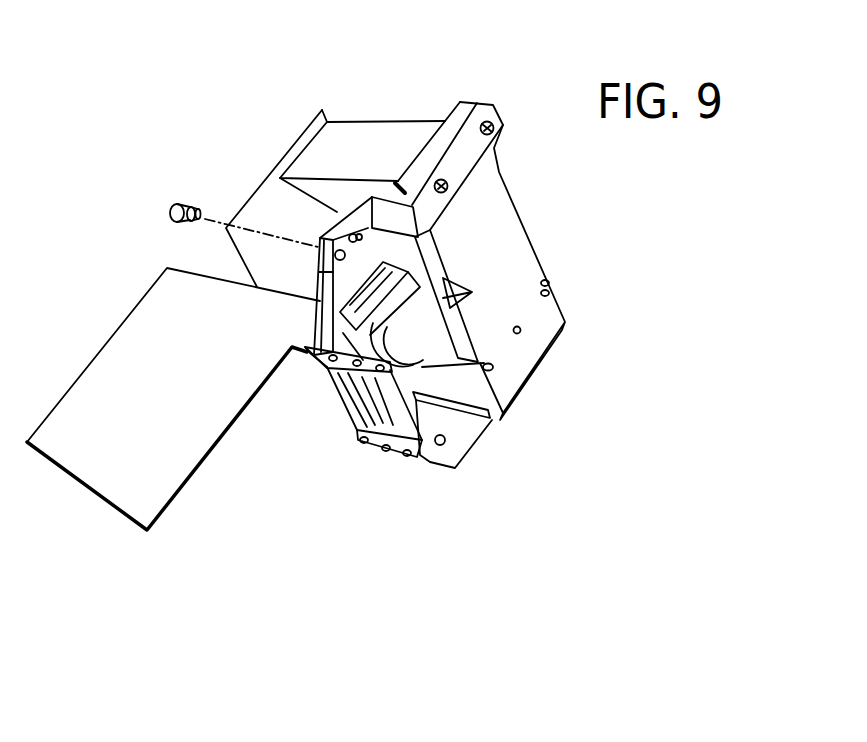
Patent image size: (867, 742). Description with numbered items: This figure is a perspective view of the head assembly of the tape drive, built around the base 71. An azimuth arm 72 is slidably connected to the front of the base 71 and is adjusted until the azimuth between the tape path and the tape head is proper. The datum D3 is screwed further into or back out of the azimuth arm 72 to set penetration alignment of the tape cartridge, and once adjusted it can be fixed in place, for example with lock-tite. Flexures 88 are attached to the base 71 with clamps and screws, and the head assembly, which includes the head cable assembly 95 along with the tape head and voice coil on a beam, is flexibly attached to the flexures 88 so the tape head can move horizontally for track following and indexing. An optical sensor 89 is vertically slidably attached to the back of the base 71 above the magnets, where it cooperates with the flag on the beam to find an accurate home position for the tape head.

The optical sensor 89 is at (393, 120).
The azimuth arm 72 is at (483, 102).
The base 71 is at (565, 333).
The flexures 88 is at (345, 407).
The head cable assembly 95 is at (125, 318).
The datum D3 is at (170, 205).